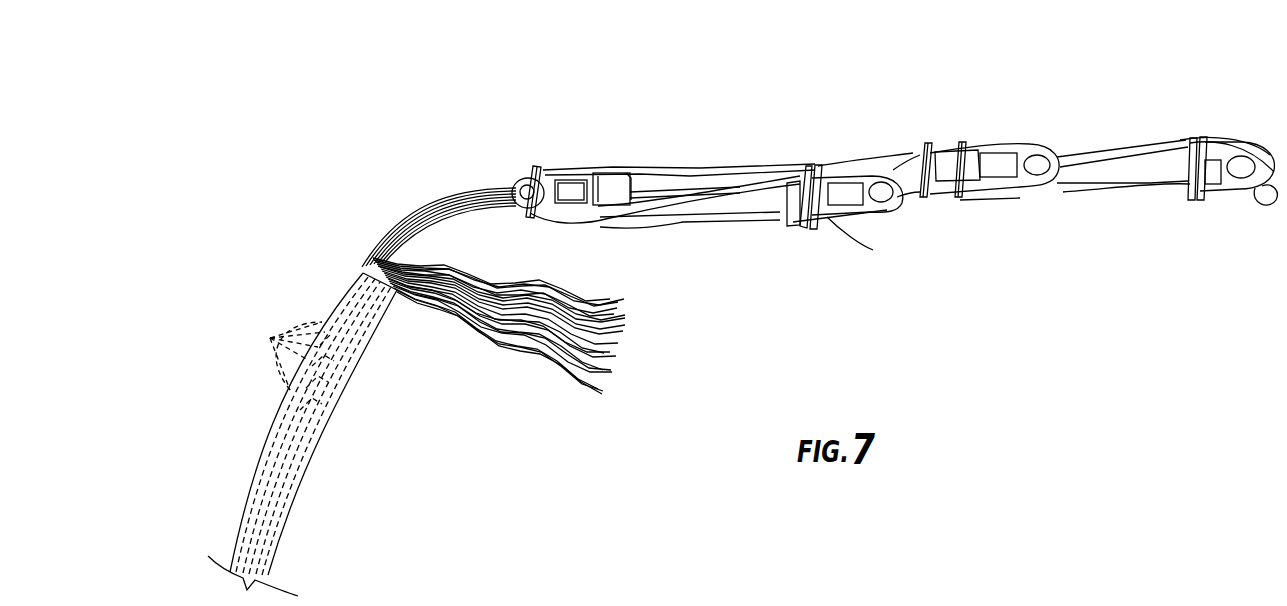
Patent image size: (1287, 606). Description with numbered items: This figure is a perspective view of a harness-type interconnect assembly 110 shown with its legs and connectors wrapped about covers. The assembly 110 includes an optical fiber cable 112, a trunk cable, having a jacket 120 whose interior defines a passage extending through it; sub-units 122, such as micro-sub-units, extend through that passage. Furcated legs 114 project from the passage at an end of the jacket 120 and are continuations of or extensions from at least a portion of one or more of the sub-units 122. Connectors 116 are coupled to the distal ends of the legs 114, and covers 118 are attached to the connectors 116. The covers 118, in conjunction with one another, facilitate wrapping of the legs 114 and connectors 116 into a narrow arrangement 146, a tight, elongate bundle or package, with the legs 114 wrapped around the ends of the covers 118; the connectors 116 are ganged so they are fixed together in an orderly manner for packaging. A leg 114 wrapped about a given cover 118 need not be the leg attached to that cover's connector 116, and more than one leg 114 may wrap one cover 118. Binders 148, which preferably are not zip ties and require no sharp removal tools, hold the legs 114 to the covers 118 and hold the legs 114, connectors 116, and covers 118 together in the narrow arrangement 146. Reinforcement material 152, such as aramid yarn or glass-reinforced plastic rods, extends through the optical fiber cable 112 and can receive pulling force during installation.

The interconnect assembly 110 is at (763, 84).
The optical fiber cable 112 is at (247, 516).
The furcated legs 114 is at (441, 211).
The connectors 116 is at (632, 200).
The covers 118 is at (545, 163).
The jacket 120 is at (345, 292).
The sub-units 122 is at (266, 337).
The narrow arrangement 146 is at (1202, 123).
The binders 148 is at (947, 200).
The reinforcement material 152 is at (597, 390).